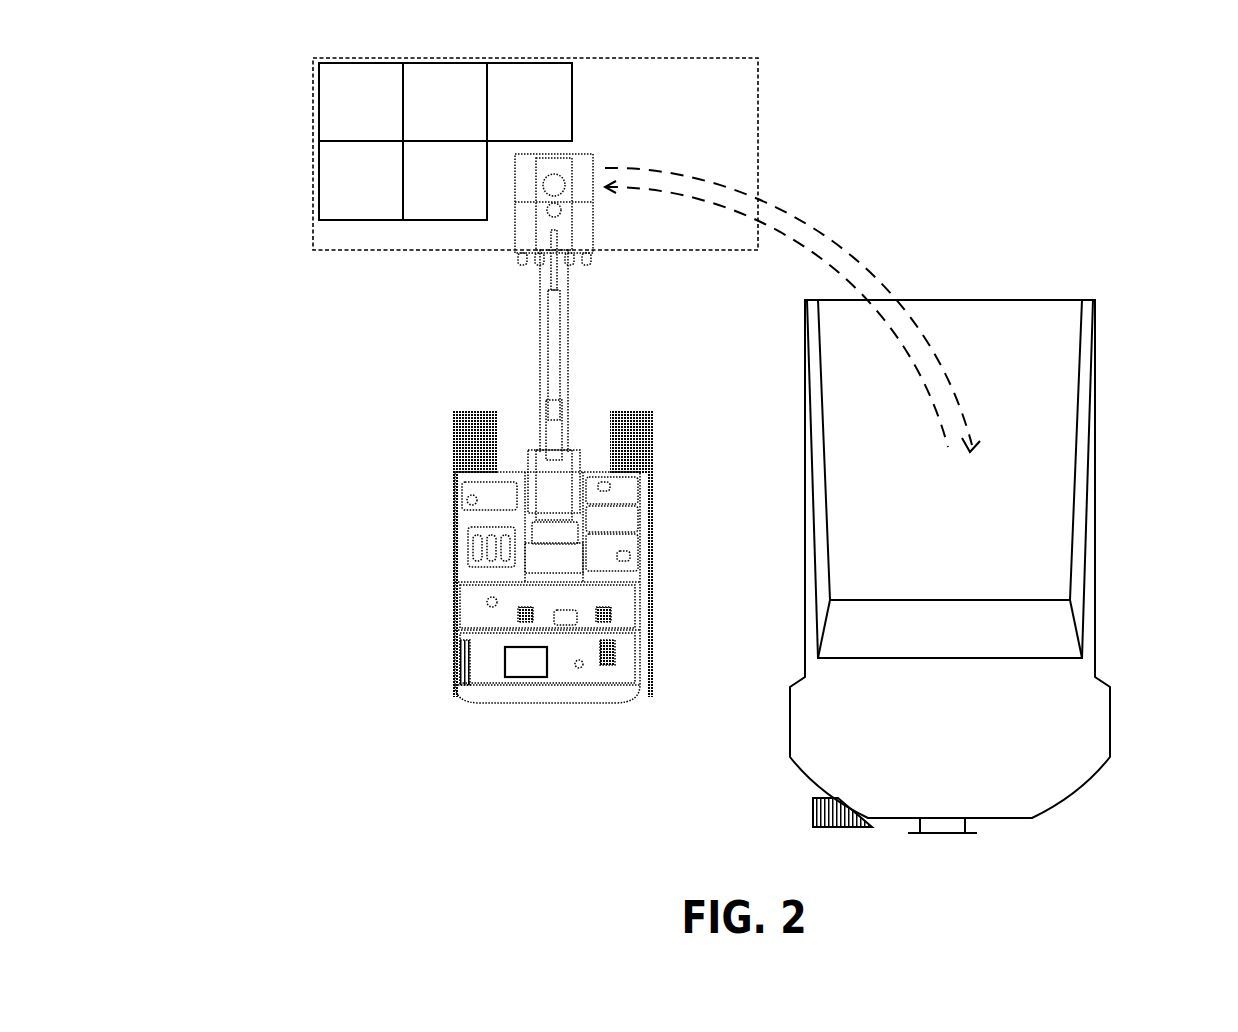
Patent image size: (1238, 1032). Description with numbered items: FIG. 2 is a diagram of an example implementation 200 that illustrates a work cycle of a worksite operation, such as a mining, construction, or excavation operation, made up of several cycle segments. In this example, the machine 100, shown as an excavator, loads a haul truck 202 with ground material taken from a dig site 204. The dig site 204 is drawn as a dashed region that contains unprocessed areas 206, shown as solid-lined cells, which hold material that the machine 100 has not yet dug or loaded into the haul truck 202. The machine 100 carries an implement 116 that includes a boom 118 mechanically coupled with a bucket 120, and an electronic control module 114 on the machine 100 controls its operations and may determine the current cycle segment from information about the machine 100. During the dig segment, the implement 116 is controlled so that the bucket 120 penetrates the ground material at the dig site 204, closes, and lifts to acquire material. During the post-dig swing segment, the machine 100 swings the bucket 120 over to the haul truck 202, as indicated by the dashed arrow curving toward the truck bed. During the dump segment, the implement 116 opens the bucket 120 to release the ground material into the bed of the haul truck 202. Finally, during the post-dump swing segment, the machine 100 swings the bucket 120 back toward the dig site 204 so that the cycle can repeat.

The machine 100 is at (392, 558).
The electronic control module 114 is at (520, 678).
The implement 116 is at (600, 300).
The boom 118 is at (538, 357).
The bucket 120 is at (522, 233).
The example implementation 200 is at (253, 73).
The haul truck 202 is at (1110, 755).
The dig site 204 is at (312, 250).
The unprocessed areas 206 is at (570, 56).